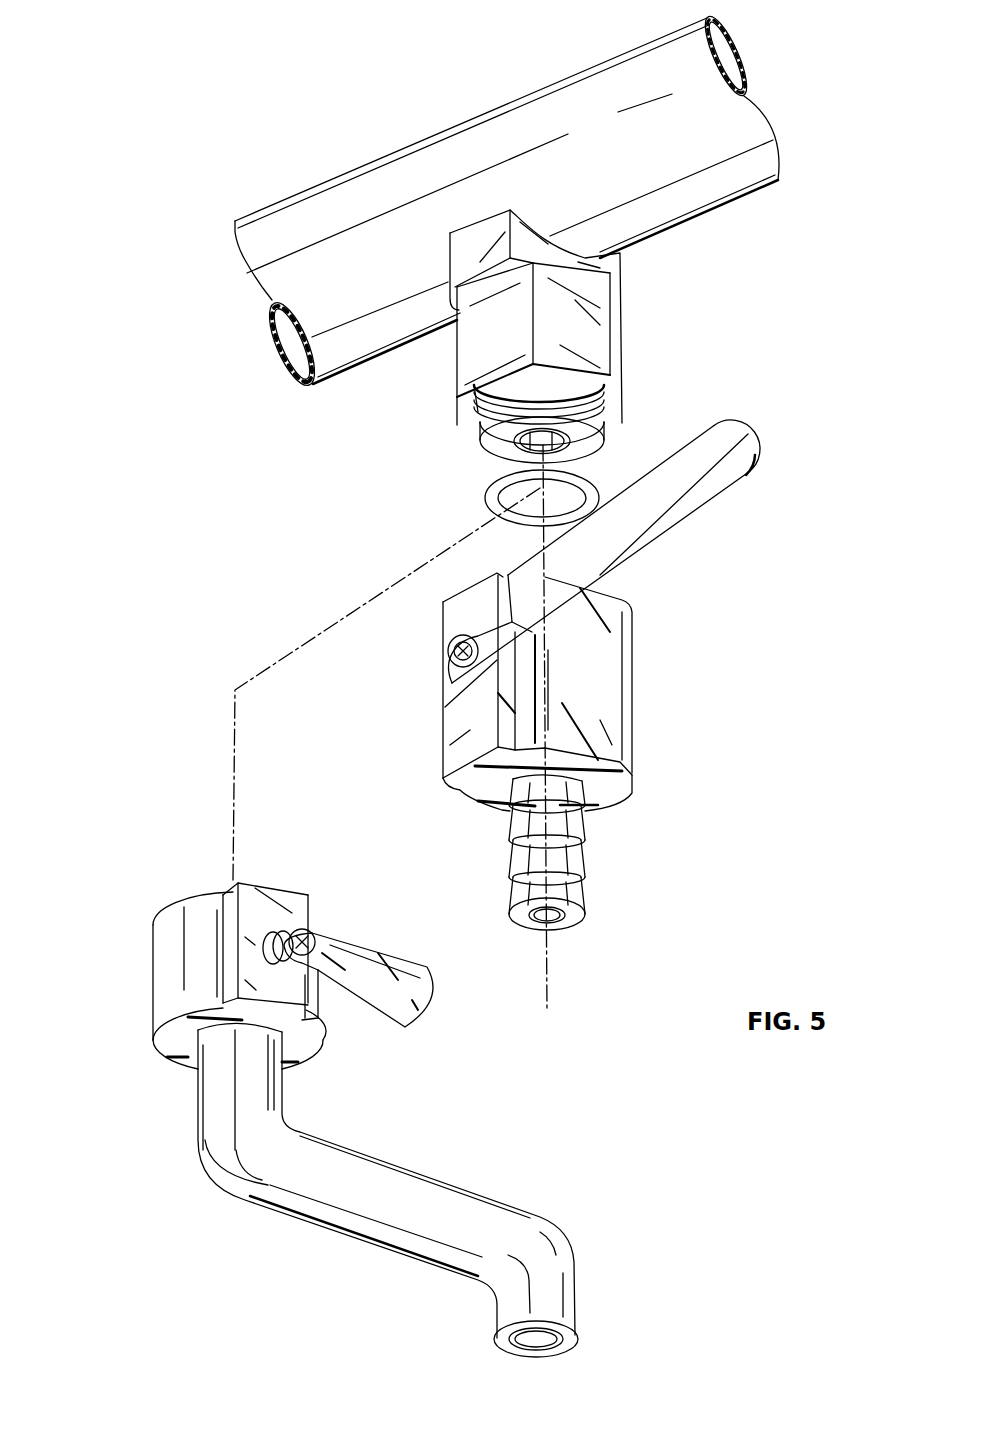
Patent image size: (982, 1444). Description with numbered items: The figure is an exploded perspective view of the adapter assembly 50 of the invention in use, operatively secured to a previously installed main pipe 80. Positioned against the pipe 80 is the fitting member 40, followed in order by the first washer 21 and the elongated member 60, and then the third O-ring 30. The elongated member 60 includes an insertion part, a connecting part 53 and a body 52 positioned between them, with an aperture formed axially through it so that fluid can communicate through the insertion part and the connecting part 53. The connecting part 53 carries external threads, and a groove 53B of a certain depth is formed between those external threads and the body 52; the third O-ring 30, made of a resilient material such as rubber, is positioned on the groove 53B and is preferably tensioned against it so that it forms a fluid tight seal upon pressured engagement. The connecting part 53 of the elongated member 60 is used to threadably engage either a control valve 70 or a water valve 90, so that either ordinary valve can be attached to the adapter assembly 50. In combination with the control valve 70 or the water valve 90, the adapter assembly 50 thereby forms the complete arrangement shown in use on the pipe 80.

The pipe 80 is at (518, 120).
The fitting member 40 is at (449, 258).
The elongated member 60 is at (665, 303).
The body 52 is at (600, 330).
The groove 53B is at (570, 385).
The connecting part 53 is at (470, 422).
The first washer 21 is at (470, 425).
The third O-ring 30 is at (485, 500).
The adapter assembly 50 is at (723, 388).
The control valve 70 is at (757, 648).
The water valve 90 is at (97, 917).